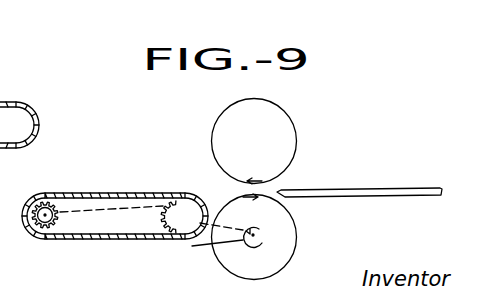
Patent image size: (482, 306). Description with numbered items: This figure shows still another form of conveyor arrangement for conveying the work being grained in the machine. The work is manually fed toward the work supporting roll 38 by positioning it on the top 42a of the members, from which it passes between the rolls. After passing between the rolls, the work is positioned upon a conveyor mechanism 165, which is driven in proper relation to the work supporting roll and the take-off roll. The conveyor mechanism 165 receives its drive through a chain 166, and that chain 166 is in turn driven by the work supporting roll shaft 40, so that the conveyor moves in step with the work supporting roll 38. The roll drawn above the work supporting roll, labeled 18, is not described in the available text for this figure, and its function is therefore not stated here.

The roller 18 is at (288, 125).
The work supporting roll 38 is at (283, 252).
The work supporting roll shaft 40 is at (262, 243).
The top of the members 42a is at (342, 198).
The conveyor mechanism 165 is at (117, 239).
The chain 166 is at (184, 239).